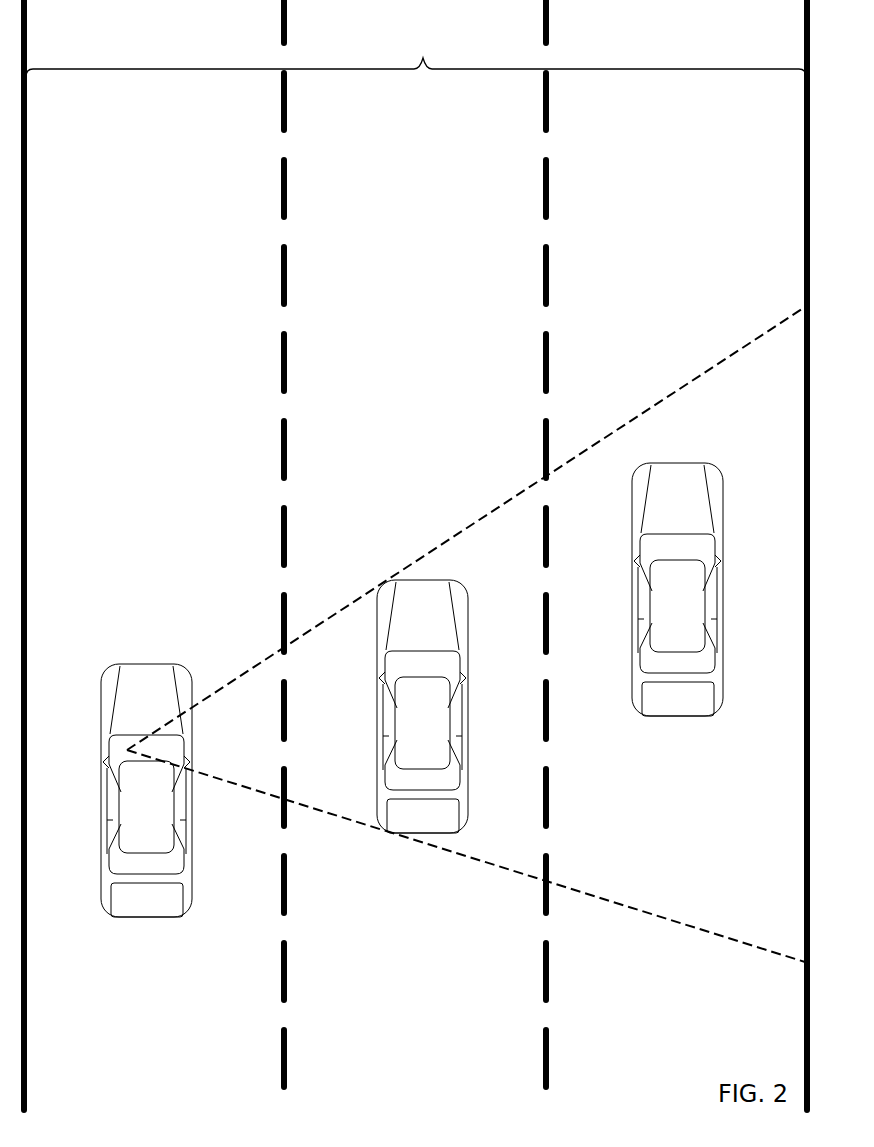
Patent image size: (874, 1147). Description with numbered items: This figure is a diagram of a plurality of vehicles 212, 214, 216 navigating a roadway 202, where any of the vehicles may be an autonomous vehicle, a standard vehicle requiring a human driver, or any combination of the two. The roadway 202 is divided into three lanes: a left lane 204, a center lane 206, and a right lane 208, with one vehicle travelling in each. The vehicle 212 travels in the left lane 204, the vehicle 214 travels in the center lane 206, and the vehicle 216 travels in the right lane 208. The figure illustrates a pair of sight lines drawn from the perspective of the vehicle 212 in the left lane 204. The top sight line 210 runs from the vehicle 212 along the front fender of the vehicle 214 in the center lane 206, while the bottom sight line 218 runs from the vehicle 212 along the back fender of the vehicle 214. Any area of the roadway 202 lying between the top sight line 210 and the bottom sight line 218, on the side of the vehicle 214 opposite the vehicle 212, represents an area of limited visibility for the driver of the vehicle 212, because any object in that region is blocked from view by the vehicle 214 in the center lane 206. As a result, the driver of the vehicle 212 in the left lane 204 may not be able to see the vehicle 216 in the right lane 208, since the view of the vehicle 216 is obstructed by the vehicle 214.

The roadway 202 is at (410, 47).
The left lane 204 is at (138, 222).
The center lane 206 is at (412, 222).
The right lane 208 is at (664, 222).
The top sight line 210 is at (460, 523).
The vehicle 212 is at (90, 768).
The vehicle 214 is at (365, 692).
The vehicle 216 is at (620, 522).
The bottom sight line 218 is at (500, 882).